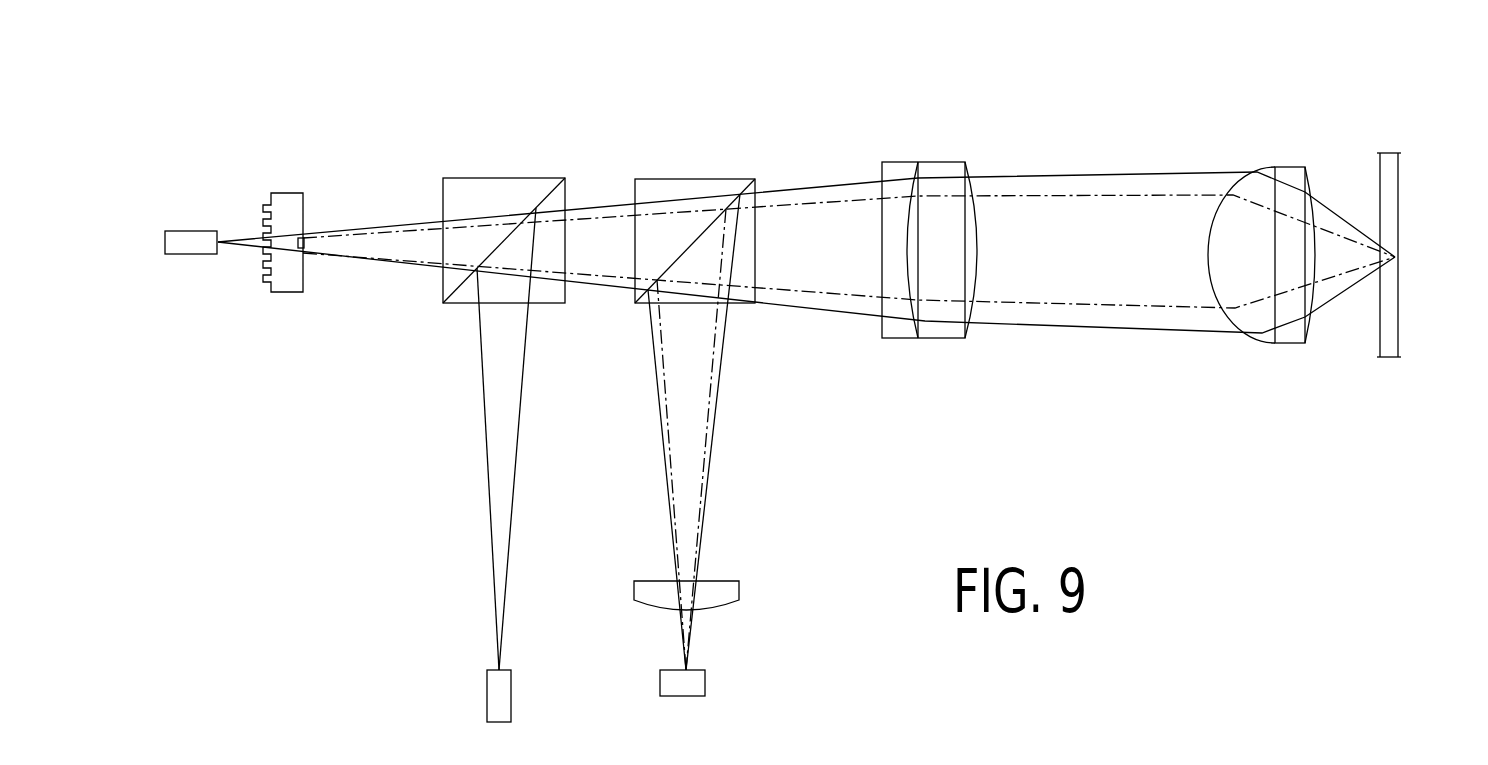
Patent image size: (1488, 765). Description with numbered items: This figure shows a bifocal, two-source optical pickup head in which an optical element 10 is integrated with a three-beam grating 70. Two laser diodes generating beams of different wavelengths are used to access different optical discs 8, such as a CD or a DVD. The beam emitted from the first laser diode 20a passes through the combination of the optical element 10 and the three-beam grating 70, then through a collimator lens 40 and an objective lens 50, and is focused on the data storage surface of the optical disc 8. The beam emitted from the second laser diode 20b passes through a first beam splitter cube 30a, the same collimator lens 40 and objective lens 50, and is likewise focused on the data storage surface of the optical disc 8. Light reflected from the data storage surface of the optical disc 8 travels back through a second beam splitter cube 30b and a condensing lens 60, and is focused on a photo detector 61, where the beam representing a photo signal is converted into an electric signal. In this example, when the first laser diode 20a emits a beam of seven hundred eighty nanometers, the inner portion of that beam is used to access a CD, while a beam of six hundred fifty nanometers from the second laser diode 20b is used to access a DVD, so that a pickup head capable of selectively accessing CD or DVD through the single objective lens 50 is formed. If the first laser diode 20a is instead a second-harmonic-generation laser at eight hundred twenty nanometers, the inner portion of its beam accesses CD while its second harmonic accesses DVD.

The optical disc 8 is at (1400, 193).
The optical element 10 is at (314, 246).
The first laser diode 20a is at (181, 228).
The second laser diode 20b is at (485, 702).
The first beam splitter cube 30a is at (696, 237).
The second beam splitter cube 30b is at (508, 235).
The collimator lens 40 is at (902, 160).
The objective lens 50 is at (1292, 163).
The condensing lens 60 is at (735, 573).
The photo detector 61 is at (718, 684).
The three-beam grating 70 is at (283, 192).